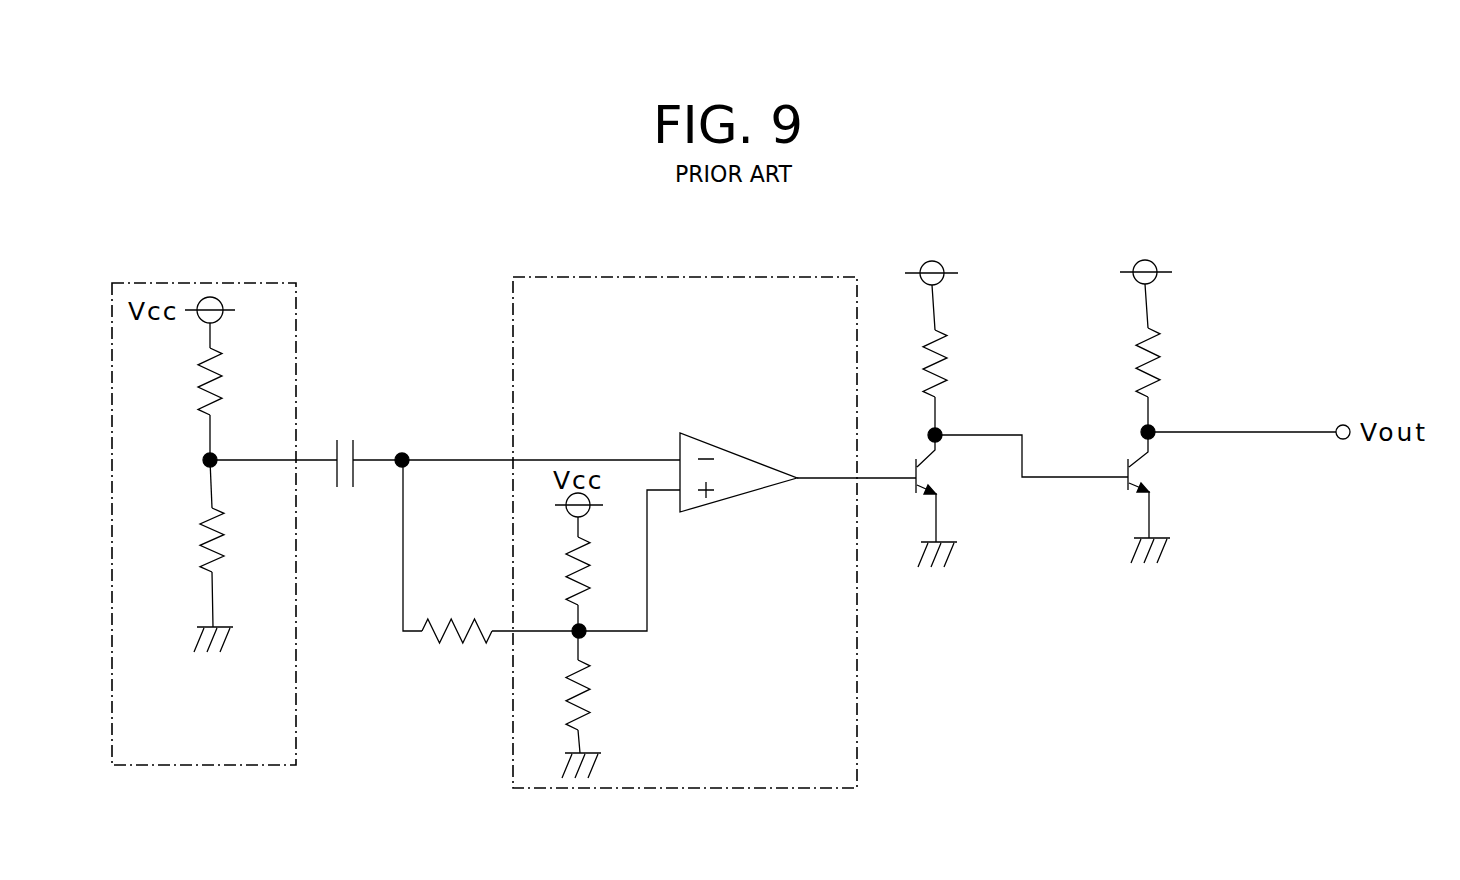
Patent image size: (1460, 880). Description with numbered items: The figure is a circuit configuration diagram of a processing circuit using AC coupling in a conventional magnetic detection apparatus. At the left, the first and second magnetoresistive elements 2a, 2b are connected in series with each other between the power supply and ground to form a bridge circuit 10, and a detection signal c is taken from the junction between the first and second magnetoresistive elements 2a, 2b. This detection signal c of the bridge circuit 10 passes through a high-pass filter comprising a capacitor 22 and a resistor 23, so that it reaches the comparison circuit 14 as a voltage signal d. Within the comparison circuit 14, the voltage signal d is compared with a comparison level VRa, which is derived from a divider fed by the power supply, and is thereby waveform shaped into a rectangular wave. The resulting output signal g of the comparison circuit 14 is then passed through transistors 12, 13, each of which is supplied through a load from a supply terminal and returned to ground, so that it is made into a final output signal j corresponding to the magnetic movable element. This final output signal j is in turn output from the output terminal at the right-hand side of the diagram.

The bridge circuit 10 is at (188, 280).
The comparison circuit 14 is at (655, 277).
The first magnetoresistive element 2a is at (191, 381).
The second magnetoresistive element 2b is at (193, 540).
The capacitor 22 is at (343, 493).
The resistor 23 is at (440, 653).
The transistor 12 is at (938, 484).
The transistor 13 is at (1154, 478).
The detection signal c is at (263, 460).
The voltage signal d is at (636, 455).
The output signal of the comparison circuit g is at (892, 480).
The final output signal j is at (1245, 430).
The comparison level VRa is at (648, 605).